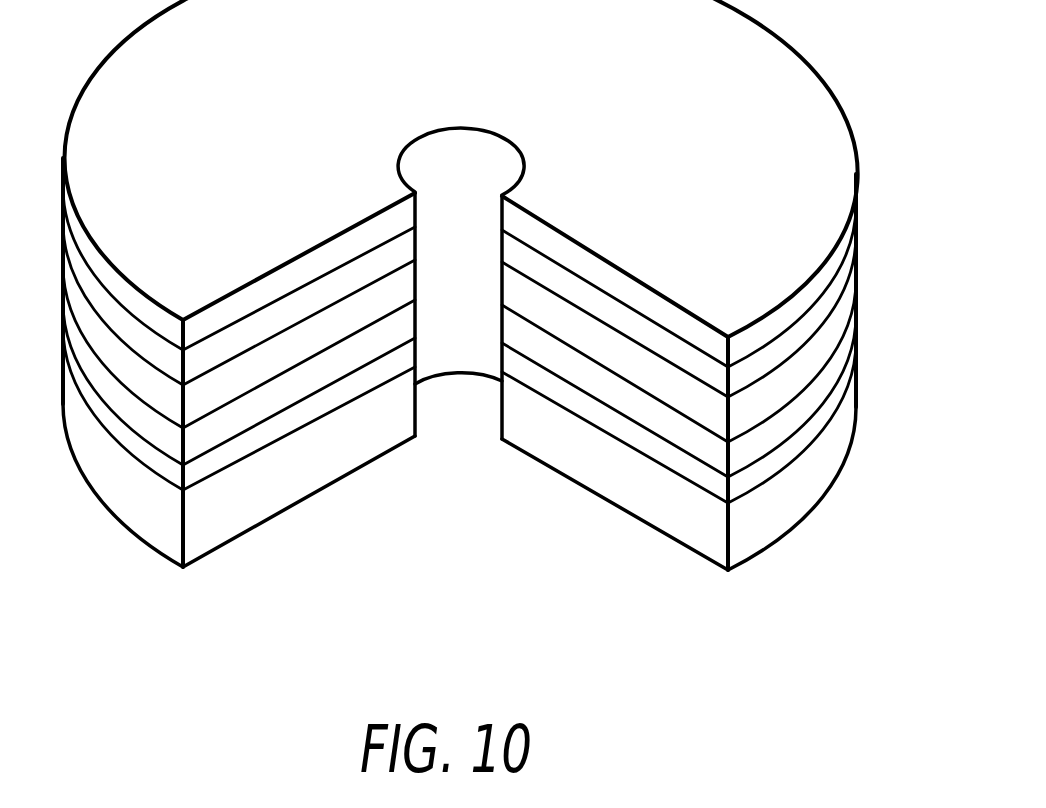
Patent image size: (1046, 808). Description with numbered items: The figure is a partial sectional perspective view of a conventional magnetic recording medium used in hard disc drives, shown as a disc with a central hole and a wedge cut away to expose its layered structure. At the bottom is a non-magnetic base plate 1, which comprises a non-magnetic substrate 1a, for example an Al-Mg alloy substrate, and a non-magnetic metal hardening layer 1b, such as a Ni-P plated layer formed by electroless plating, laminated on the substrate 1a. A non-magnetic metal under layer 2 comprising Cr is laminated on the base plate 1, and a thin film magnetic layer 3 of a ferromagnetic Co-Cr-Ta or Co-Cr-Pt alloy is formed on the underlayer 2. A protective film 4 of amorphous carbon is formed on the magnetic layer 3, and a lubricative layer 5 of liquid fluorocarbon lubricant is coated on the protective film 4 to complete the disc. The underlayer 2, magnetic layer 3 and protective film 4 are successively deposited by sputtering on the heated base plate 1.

The non-magnetic base plate 1 is at (459, 490).
The non-magnetic substrate 1a is at (668, 512).
The non-magnetic metal layer (hardening layer) 1b is at (653, 443).
The non-magnetic metal under layer 2 is at (292, 387).
The thin film magnetic layer 3 is at (332, 325).
The protective film 4 is at (278, 317).
The lubricative layer 5 is at (220, 318).